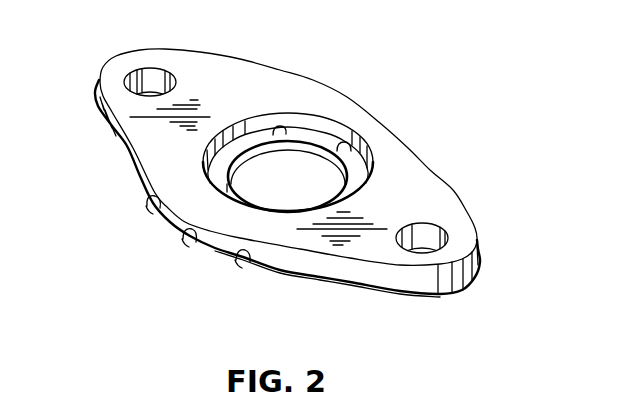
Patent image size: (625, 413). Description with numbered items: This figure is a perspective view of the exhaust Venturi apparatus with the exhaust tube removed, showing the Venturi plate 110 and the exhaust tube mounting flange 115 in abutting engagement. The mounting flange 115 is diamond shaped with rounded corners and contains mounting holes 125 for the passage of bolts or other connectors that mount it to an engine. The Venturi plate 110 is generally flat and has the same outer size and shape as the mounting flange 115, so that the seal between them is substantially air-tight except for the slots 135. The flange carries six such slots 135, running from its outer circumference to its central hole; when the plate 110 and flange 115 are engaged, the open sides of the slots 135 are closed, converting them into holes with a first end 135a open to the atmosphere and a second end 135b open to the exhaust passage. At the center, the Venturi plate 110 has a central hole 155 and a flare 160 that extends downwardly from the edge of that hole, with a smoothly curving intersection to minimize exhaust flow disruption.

The Venturi plate 110 is at (408, 297).
The exhaust tube mounting flange 115 is at (282, 92).
The mounting holes 125 is at (152, 76).
The slots 135 is at (190, 237).
The first end 135a is at (245, 262).
The second end 135b is at (349, 148).
The central hole 155 is at (326, 183).
The flare 160 is at (314, 149).